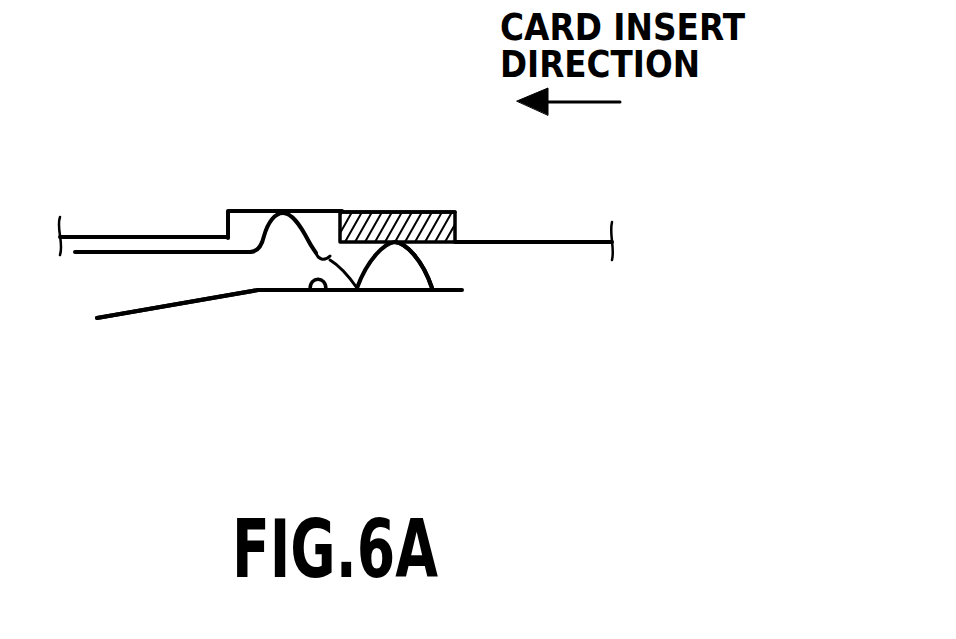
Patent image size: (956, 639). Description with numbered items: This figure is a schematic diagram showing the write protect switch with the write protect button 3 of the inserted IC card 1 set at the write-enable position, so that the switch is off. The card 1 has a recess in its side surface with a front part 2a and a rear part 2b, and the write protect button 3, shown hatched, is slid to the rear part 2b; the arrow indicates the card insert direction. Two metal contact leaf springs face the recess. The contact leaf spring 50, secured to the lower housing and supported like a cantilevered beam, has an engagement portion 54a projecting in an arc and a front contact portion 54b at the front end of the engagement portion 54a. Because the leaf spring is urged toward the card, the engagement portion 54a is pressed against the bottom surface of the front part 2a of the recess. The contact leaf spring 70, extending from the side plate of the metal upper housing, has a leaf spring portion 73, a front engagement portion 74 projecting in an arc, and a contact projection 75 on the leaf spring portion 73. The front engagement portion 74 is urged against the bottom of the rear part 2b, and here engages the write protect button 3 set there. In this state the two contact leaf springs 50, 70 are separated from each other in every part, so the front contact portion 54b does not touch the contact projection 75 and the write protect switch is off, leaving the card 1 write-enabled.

The IC card 1 is at (557, 230).
The front part of the recess 2a is at (250, 211).
The rear part of the recess 2b is at (423, 212).
The write protect button 3 is at (363, 212).
The contact leaf spring 50 is at (140, 252).
The engagement portion 54a is at (283, 213).
The front contact portion 54b is at (358, 290).
The contact leaf spring 70 is at (271, 306).
The leaf spring portion 73 is at (162, 312).
The front engagement portion 74 is at (432, 270).
The contact projection 75 is at (320, 292).